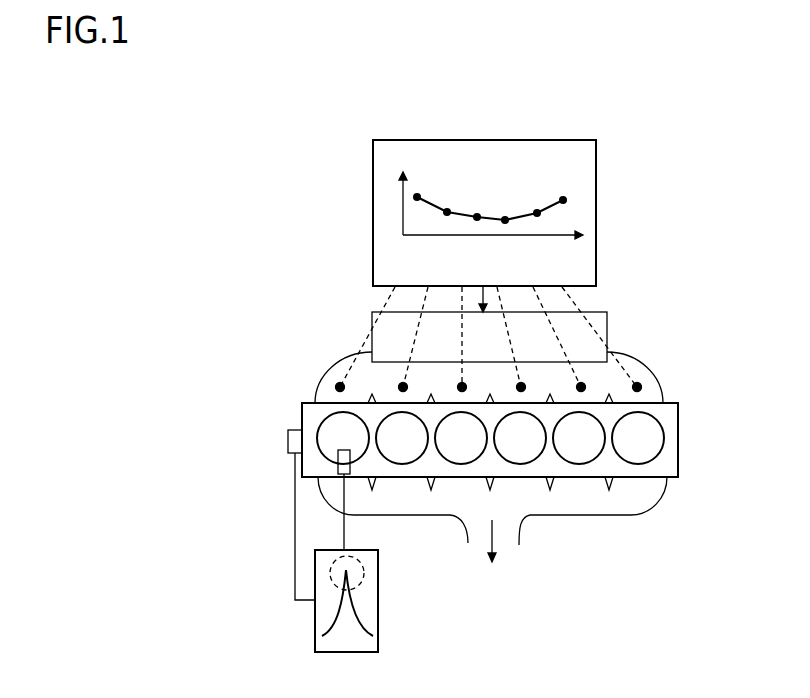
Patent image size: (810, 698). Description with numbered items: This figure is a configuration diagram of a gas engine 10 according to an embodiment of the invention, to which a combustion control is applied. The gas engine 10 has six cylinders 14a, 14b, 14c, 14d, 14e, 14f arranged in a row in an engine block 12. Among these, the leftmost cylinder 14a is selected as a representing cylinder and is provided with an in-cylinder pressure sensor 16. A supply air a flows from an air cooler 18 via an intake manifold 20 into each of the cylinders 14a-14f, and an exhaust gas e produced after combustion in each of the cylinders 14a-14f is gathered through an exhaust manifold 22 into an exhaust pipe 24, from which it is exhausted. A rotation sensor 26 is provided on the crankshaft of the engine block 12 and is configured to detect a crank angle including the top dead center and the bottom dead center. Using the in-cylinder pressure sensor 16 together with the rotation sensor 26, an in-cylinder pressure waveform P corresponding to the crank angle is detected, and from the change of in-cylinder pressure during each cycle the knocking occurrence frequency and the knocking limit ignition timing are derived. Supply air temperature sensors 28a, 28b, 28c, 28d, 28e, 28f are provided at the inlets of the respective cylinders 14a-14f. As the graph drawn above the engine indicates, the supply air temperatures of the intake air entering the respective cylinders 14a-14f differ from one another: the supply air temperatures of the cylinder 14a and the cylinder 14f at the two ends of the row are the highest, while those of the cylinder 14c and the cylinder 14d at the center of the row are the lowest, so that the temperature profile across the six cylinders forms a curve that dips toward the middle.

The gas engine 10 is at (494, 126).
The engine block 12 is at (679, 440).
The cylinder 14a is at (330, 451).
The cylinder 14b is at (400, 462).
The cylinder 14c is at (461, 462).
The cylinder 14d is at (537, 455).
The cylinder 14e is at (580, 455).
The cylinder 14f is at (637, 455).
The in-cylinder pressure sensor 16 is at (338, 467).
The air cooler 18 is at (607, 328).
The intake manifold 20 is at (647, 352).
The exhaust manifold 22 is at (668, 487).
The exhaust pipe 24 is at (519, 533).
The rotation sensor 26 is at (294, 430).
The supply air temperature sensor 28a is at (338, 385).
The supply air temperature sensor 28b is at (405, 386).
The supply air temperature sensor 28c is at (464, 386).
The supply air temperature sensor 28d is at (523, 386).
The supply air temperature sensor 28e is at (583, 386).
The supply air temperature sensor 28f is at (639, 387).
The supply air a is at (455, 312).
The exhaust gas e is at (490, 529).
The in-cylinder pressure waveform P is at (362, 618).